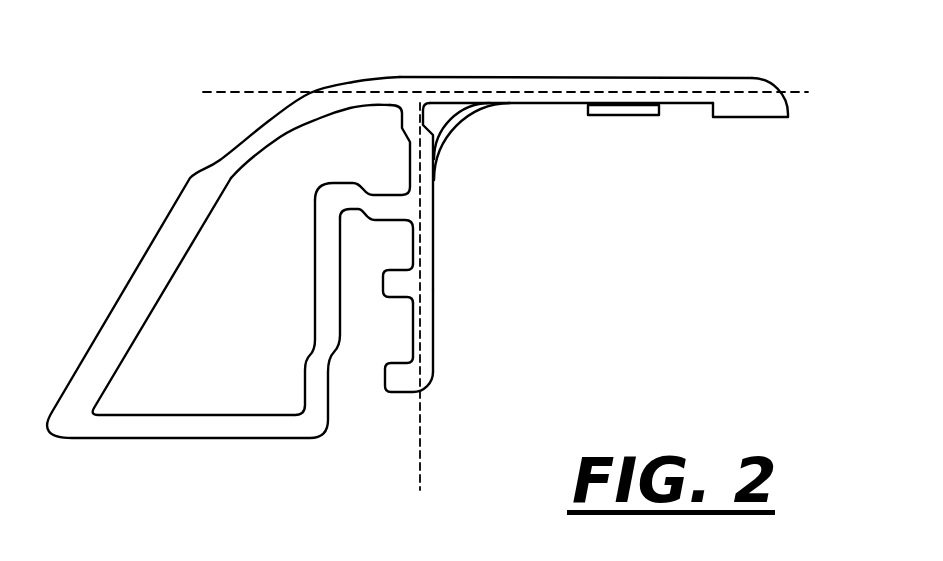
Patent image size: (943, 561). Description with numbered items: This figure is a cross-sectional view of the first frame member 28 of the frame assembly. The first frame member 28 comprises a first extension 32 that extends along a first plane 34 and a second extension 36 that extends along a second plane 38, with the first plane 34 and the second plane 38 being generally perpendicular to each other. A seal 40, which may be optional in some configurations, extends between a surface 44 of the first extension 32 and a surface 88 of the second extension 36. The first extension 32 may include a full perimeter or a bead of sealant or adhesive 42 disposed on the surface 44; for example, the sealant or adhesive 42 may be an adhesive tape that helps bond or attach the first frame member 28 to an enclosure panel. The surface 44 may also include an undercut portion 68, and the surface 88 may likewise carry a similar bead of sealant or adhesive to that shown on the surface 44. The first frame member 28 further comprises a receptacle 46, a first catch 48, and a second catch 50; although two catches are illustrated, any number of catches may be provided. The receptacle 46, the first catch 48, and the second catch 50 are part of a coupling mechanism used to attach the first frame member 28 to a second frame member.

The first frame member 28 is at (133, 156).
The first extension 32 is at (751, 85).
The first plane 34 is at (247, 92).
The second extension 36 is at (434, 360).
The second plane 38 is at (422, 463).
The seal 40 is at (472, 153).
The sealant or adhesive 42 is at (617, 116).
The surface 44 is at (695, 104).
The receptacle 46 is at (362, 261).
The first catch 48 is at (400, 285).
The second catch 50 is at (405, 375).
The undercut portion 68 is at (758, 118).
The surface 88 is at (434, 227).